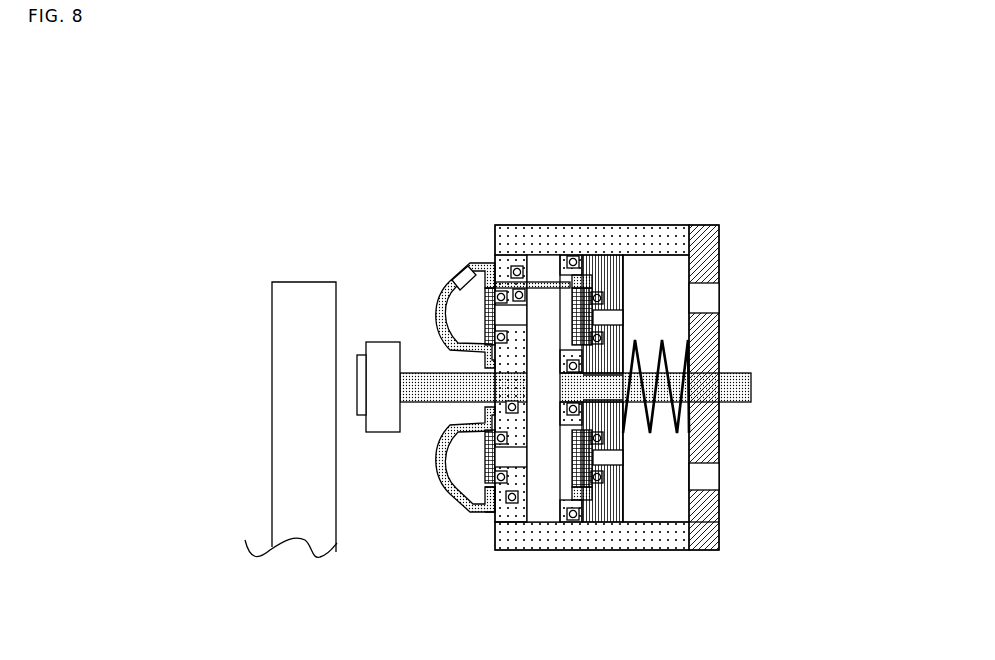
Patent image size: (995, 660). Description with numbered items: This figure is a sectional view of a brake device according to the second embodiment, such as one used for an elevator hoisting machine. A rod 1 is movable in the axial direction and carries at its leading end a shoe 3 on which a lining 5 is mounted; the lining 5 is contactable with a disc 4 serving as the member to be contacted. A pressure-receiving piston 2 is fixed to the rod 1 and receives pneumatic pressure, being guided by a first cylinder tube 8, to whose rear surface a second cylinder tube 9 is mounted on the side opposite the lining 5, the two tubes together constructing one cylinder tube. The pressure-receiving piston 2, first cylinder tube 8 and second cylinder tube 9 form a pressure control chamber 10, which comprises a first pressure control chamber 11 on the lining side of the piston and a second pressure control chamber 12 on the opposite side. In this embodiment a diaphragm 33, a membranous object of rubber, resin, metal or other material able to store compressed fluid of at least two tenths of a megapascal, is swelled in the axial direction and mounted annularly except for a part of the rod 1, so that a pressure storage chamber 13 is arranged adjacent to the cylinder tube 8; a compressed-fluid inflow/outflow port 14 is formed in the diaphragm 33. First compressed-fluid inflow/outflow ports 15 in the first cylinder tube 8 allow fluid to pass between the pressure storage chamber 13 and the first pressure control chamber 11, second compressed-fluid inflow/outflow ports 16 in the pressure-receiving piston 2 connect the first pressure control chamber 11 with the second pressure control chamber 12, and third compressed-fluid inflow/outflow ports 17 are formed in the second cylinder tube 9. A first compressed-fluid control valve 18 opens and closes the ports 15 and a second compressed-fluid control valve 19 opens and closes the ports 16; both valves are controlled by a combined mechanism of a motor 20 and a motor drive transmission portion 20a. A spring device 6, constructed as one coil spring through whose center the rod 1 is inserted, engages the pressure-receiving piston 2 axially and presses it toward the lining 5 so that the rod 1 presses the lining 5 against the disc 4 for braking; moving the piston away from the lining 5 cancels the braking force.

The rod 1 is at (740, 385).
The pressure-receiving piston 2 is at (601, 250).
The shoe 3 is at (377, 400).
The disc 4 is at (288, 348).
The lining 5 is at (362, 377).
The spring device 6 is at (668, 352).
The first cylinder tube 8 is at (497, 550).
The second cylinder tube 9 is at (700, 537).
The pressure control chamber 10 is at (607, 455).
The first pressure control chamber 11 is at (542, 503).
The second pressure control chamber 12 is at (658, 475).
The pressure storage chamber 13 is at (421, 297).
The compressed-fluid inflow/outflow port 14 is at (465, 278).
The first compressed-fluid inflow/outflow ports 15 is at (483, 462).
The second compressed-fluid inflow/outflow ports 16 is at (632, 513).
The third compressed-fluid inflow/outflow ports 17 is at (710, 478).
The first compressed-fluid control valve 18 is at (483, 477).
The second compressed-fluid control valve 19 is at (595, 295).
The motor 20 is at (580, 272).
The motor drive transmission portion 20a is at (543, 282).
The diaphragm 33 is at (438, 297).